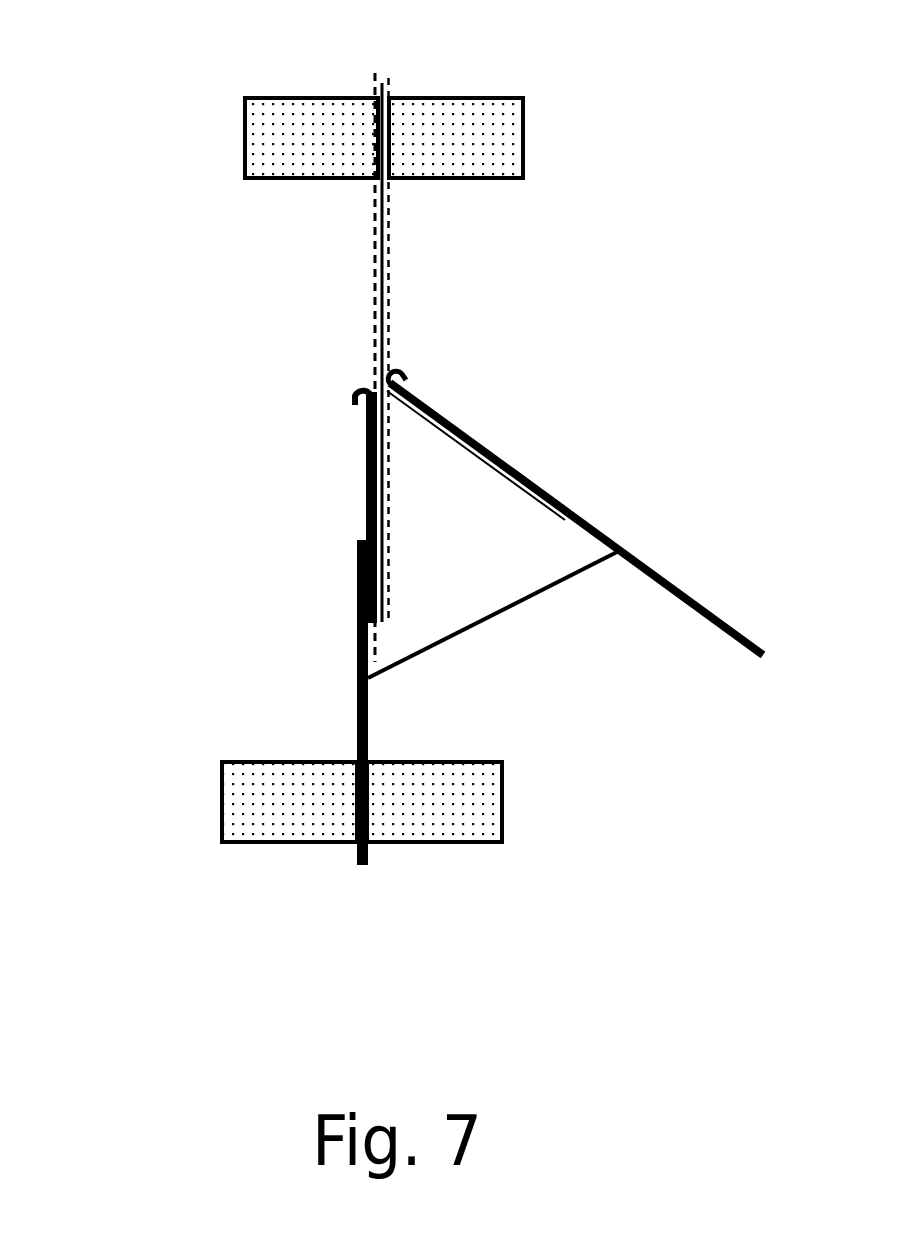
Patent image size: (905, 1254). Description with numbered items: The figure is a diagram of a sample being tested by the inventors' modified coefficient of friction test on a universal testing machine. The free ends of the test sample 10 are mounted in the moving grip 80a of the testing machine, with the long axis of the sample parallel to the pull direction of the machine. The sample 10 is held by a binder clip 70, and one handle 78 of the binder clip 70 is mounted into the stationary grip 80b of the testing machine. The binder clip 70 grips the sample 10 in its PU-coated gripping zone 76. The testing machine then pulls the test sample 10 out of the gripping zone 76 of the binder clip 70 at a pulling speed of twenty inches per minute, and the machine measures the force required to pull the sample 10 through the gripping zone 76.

The test sample 10 is at (348, 302).
The binder clip 70 is at (266, 576).
The PU-coated gripping zone 76 is at (418, 383).
The handle 78 is at (385, 727).
The moving grip 80a is at (453, 130).
The stationary grip 80b is at (430, 795).